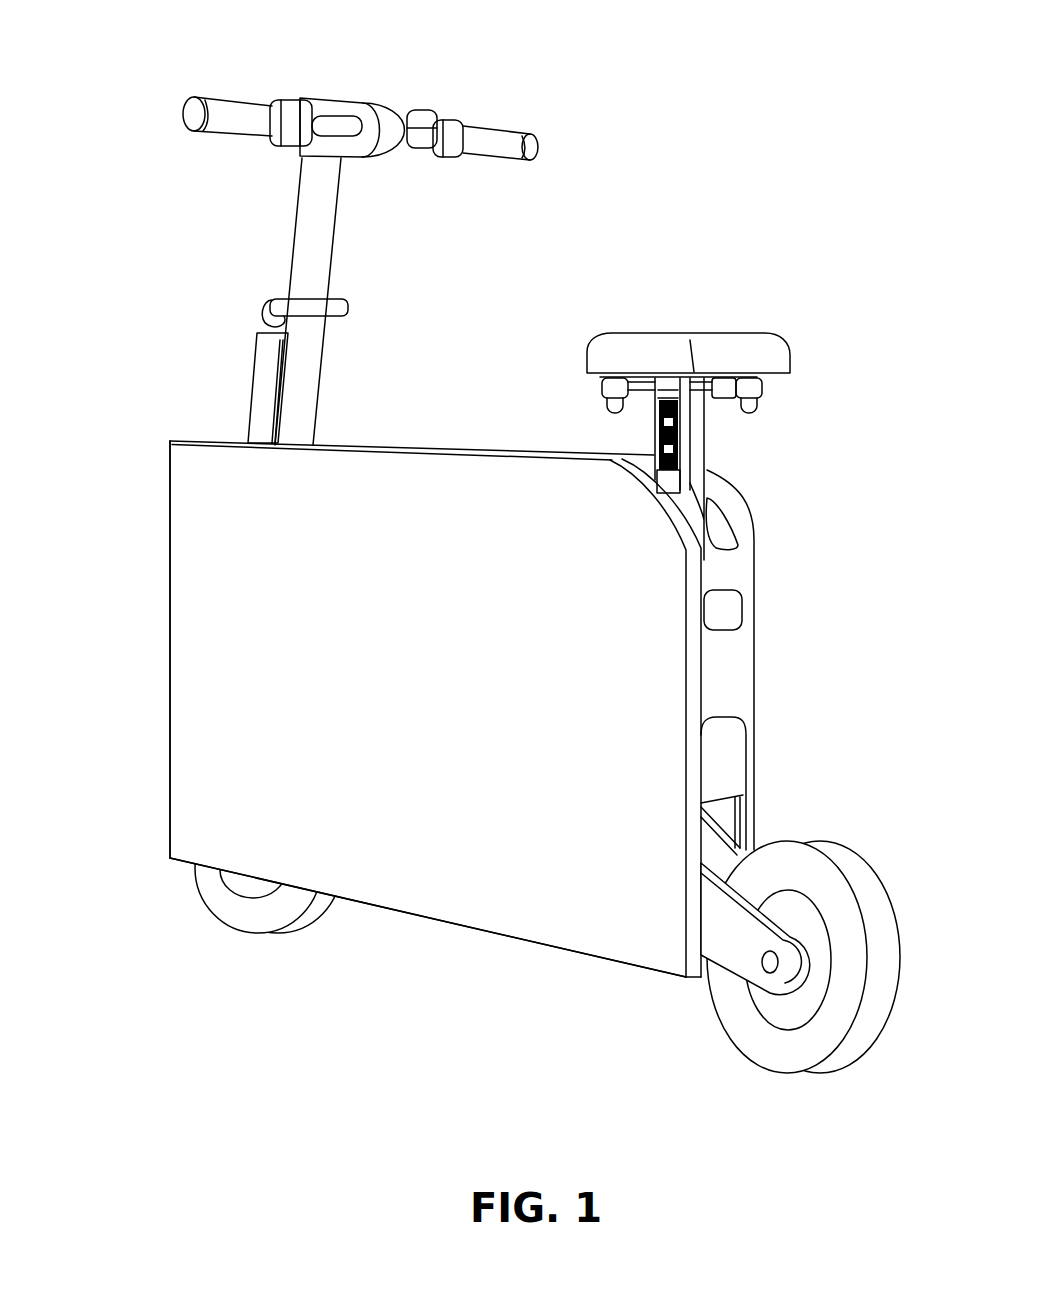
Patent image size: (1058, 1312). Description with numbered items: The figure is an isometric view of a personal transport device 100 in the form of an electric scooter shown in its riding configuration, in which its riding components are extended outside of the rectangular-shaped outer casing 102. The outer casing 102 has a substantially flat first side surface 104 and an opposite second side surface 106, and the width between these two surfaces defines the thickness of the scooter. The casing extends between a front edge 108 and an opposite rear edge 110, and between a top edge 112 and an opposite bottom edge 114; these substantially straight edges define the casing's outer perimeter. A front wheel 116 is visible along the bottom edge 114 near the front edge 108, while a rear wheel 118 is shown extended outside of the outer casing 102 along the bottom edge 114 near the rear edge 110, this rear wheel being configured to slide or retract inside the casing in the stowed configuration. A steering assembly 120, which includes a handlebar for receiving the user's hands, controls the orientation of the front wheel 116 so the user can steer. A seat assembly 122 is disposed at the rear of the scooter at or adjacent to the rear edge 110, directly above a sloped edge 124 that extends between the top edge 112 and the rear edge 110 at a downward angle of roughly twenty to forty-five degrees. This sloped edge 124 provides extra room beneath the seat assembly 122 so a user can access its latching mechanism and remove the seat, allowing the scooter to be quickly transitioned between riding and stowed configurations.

The personal transport device 100 is at (706, 92).
The outer casing 102 is at (190, 662).
The first side surface 104 is at (441, 705).
The second side surface 106 is at (768, 629).
The front edge 108 is at (170, 618).
The rear edge 110 is at (755, 668).
The top edge 112 is at (452, 445).
The bottom edge 114 is at (468, 928).
The front wheel 116 is at (262, 937).
The rear wheel 118 is at (783, 1077).
The steering assembly 120 is at (266, 246).
The seat assembly 122 is at (810, 359).
The sloped edge 124 is at (755, 505).